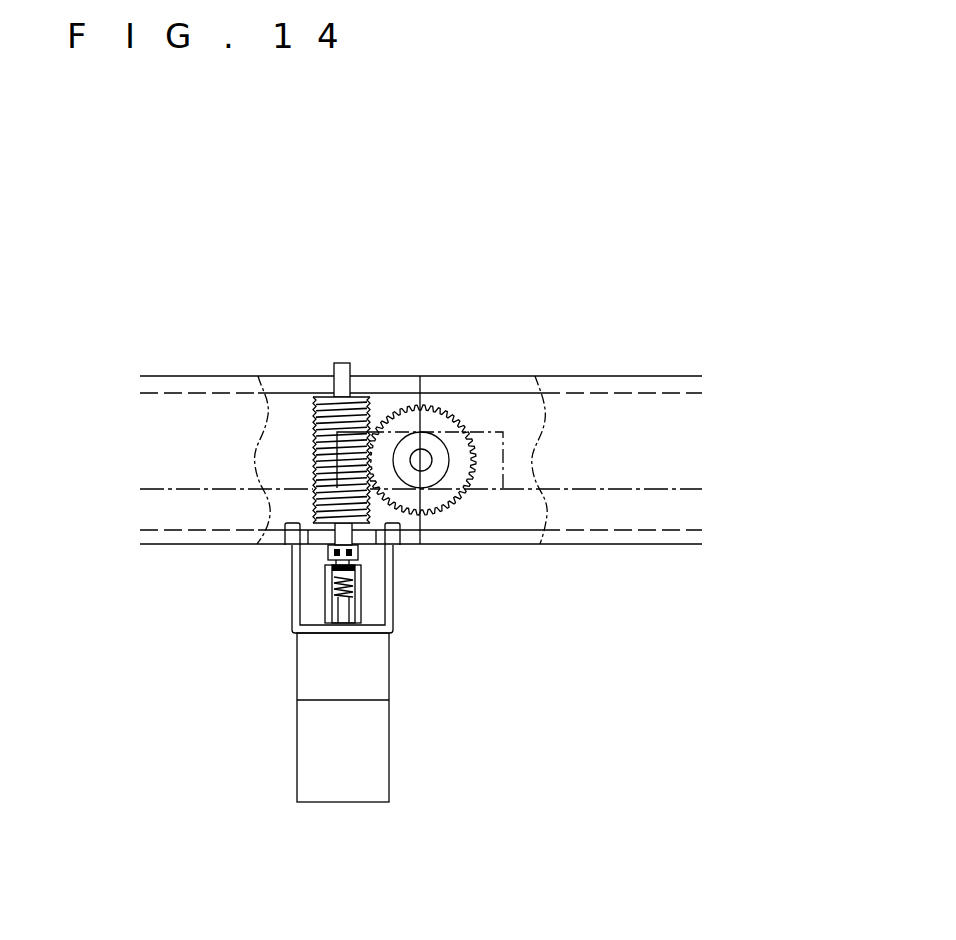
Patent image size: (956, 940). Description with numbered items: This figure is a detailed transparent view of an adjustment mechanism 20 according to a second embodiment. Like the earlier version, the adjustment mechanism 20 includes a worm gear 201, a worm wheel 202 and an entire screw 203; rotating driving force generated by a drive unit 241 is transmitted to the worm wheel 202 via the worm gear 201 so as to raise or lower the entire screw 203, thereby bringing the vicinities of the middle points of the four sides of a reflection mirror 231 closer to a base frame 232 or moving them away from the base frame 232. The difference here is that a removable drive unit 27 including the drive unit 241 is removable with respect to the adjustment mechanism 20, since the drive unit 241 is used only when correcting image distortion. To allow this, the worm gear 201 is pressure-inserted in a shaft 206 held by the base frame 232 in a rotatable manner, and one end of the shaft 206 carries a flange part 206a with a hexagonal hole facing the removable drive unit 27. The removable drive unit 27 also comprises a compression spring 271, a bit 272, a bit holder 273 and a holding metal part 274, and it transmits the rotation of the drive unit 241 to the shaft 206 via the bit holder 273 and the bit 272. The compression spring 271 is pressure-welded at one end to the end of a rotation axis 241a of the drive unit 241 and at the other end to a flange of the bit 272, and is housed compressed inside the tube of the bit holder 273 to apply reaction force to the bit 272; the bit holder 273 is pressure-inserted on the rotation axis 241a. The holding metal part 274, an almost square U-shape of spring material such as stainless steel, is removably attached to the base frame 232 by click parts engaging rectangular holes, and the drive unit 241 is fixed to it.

The adjustment mechanism 20 is at (421, 451).
The removable drive unit 27 is at (302, 676).
The worm gear 201 is at (312, 413).
The worm wheel 202 is at (453, 411).
The entire screw 203 is at (425, 450).
The shaft 206 is at (343, 363).
The flange part 206a is at (358, 551).
The reflection mirror 231 is at (623, 489).
The base frame 232 is at (568, 376).
The drive unit 241 is at (375, 790).
The rotation axis 241a is at (340, 616).
The compression spring 271 is at (330, 588).
The bit 272 is at (325, 571).
The bit holder 273 is at (358, 584).
The holding metal part 274 is at (392, 612).